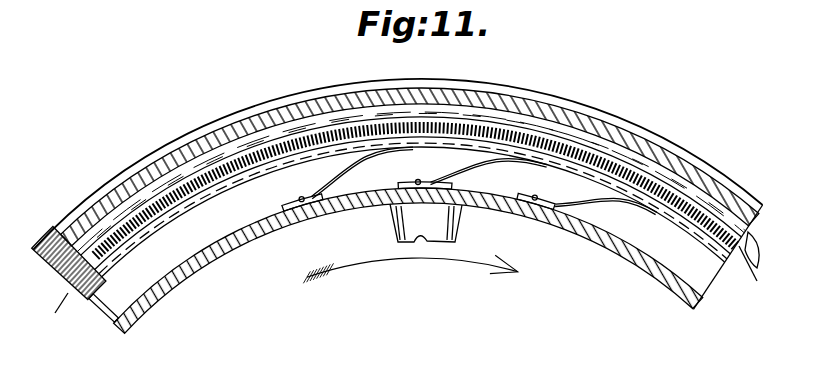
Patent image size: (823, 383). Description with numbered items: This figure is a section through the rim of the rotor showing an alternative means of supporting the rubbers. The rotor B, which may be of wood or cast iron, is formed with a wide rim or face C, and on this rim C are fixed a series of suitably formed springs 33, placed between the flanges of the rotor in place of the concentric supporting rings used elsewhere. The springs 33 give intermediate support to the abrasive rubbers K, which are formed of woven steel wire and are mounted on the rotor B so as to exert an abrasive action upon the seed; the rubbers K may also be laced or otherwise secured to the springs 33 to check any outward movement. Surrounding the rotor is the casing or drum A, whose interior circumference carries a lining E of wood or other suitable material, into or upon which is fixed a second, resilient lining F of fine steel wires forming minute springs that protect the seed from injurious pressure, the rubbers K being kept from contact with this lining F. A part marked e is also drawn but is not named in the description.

The springs 33 is at (459, 192).
The rotor B is at (426, 223).
The rim C is at (260, 234).
The inner strip e is at (698, 229).
The resilient lining F is at (727, 257).
The casing A is at (400, 173).
The lining E is at (756, 258).
The abrasive rubbers K is at (748, 277).